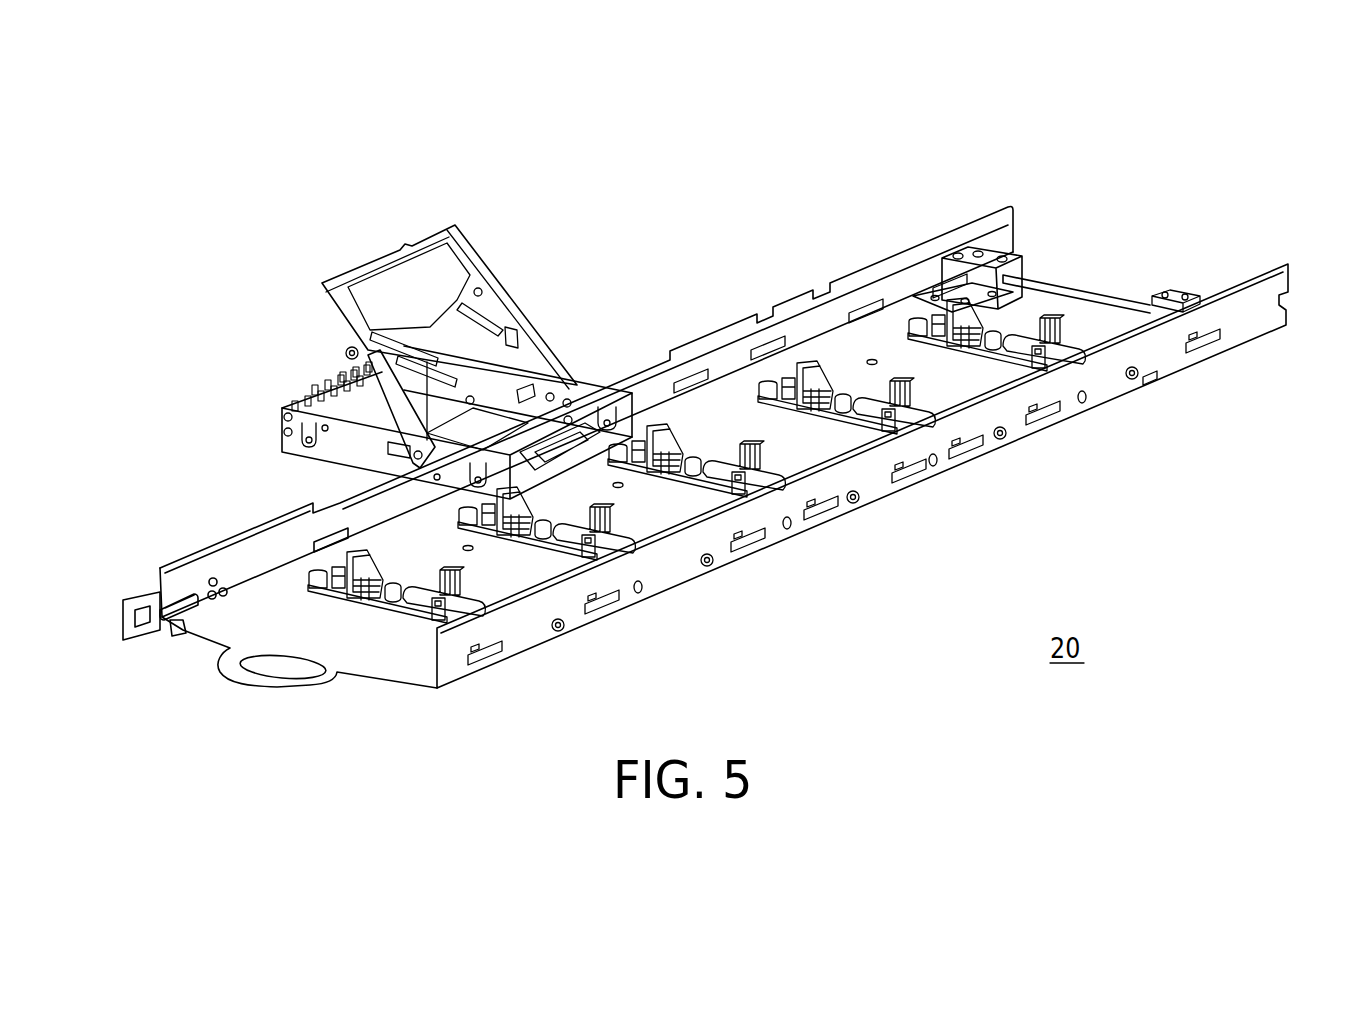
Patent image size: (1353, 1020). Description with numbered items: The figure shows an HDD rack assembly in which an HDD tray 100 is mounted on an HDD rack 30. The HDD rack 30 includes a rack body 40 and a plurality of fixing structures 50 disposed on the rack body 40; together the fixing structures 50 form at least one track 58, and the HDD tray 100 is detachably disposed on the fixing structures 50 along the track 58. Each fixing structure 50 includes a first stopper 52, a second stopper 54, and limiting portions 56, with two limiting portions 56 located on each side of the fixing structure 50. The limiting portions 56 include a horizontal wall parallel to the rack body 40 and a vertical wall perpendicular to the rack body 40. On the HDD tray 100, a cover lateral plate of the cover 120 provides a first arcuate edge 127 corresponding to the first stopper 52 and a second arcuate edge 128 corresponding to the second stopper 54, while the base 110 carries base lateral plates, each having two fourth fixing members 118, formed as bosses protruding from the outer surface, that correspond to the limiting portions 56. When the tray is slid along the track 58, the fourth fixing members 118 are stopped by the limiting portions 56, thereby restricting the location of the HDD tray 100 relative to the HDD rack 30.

The HDD rack 30 is at (1138, 176).
The rack body 40 is at (1102, 298).
The fixing structures 50 is at (688, 84).
The first stopper 52 is at (1063, 253).
The second stopper 54 is at (933, 277).
The limiting portion 56 is at (1067, 457).
The track 58 is at (867, 343).
The HDD tray 100 is at (279, 181).
The carrier frame 110 is at (288, 397).
The fourth fixing member 118 is at (353, 462).
The pivot plate 120 is at (503, 275).
The first arcuate edge 127 is at (434, 457).
The second arcuate edge 128 is at (345, 375).